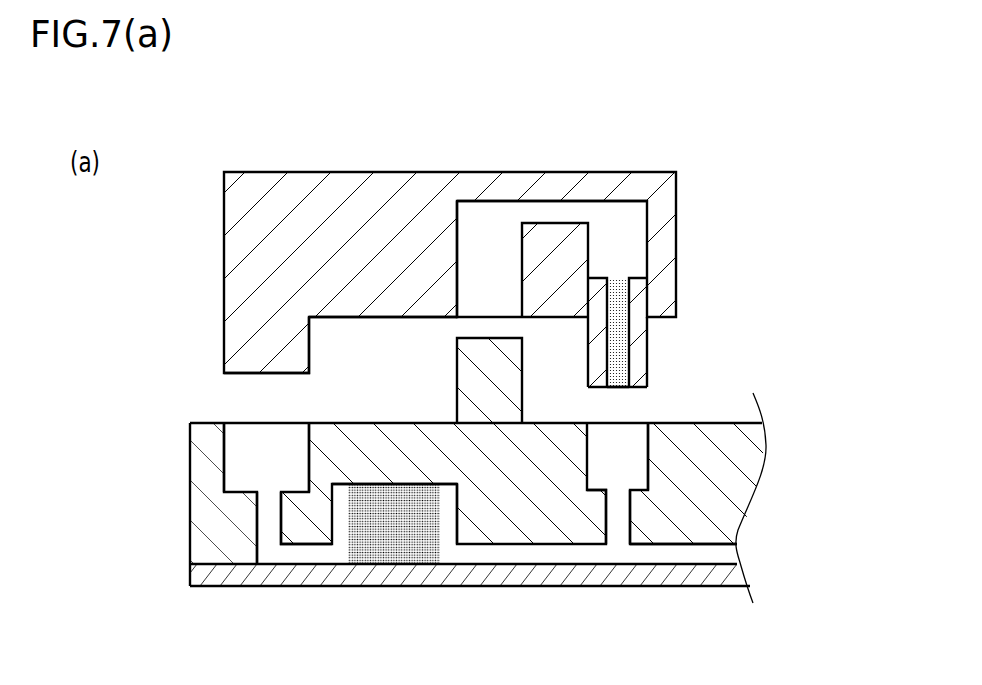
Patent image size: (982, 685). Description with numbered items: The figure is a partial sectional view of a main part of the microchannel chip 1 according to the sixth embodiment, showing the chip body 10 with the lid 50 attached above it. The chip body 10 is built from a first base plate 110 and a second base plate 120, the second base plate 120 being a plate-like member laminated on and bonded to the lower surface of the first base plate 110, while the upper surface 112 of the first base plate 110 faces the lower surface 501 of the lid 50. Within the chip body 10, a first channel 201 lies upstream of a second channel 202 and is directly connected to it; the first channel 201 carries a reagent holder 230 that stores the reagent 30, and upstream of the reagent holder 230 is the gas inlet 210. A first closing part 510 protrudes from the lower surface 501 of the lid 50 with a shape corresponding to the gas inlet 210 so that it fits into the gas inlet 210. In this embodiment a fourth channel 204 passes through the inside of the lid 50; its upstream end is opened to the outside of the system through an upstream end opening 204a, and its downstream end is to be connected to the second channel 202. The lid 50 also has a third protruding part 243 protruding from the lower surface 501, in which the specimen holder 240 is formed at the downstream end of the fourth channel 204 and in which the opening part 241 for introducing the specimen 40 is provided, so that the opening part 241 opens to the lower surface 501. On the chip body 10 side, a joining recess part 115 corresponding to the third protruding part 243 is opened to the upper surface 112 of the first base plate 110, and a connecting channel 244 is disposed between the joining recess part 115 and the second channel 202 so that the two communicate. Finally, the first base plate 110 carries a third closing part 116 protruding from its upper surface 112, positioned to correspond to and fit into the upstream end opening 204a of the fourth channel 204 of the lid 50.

The microchannel chip 1 is at (192, 260).
The chip body 10 is at (100, 515).
The first base plate 110 is at (205, 543).
The second base plate 120 is at (210, 572).
The upper surface 112 is at (727, 423).
The joining recess part 115 is at (647, 463).
The third closing part 116 is at (466, 383).
The first channel 201 is at (298, 557).
The second channel 202 is at (655, 555).
The fourth channel 204 is at (549, 213).
The cavity 204a is at (507, 313).
The gas inlet 210 is at (268, 455).
The reagent holder 230 is at (448, 552).
The specimen holder 240 is at (628, 341).
The opening part 241 is at (612, 382).
The third protruding part 243 is at (640, 355).
The connecting channel 244 is at (618, 550).
The reagent 30 is at (388, 552).
The specimen 40 is at (613, 327).
The lid 50 is at (328, 176).
The lower surface 501 is at (392, 320).
The first closing part 510 is at (265, 358).